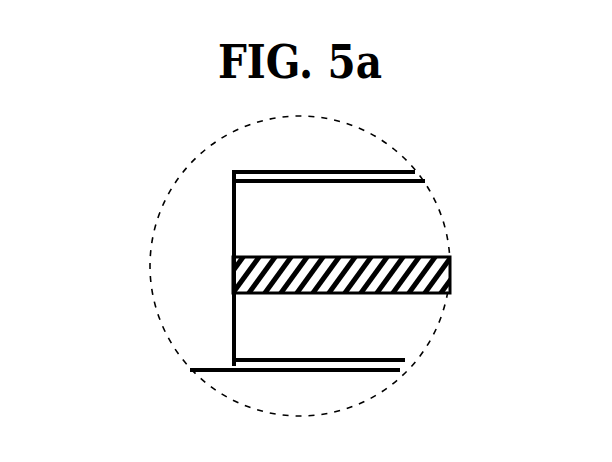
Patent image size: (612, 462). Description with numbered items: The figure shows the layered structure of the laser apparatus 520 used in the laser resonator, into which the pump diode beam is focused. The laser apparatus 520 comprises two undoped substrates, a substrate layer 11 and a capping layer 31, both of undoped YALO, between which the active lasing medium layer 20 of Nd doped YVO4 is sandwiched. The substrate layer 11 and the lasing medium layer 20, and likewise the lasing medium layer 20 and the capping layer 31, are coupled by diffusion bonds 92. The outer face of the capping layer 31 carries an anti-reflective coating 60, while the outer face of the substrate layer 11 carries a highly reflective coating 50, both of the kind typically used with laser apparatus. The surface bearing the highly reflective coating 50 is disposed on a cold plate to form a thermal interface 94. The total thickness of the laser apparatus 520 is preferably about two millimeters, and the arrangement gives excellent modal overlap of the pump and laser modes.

The laser apparatus 520 is at (411, 141).
The anti-reflective coating 60 is at (256, 170).
The capping layer 31 is at (233, 187).
The diffusion bonds 92 is at (250, 242).
The lasing medium layer 20 is at (234, 278).
The substrate layer 11 is at (233, 347).
The highly reflective coating 50 is at (240, 373).
The thermal interface 94 is at (268, 381).